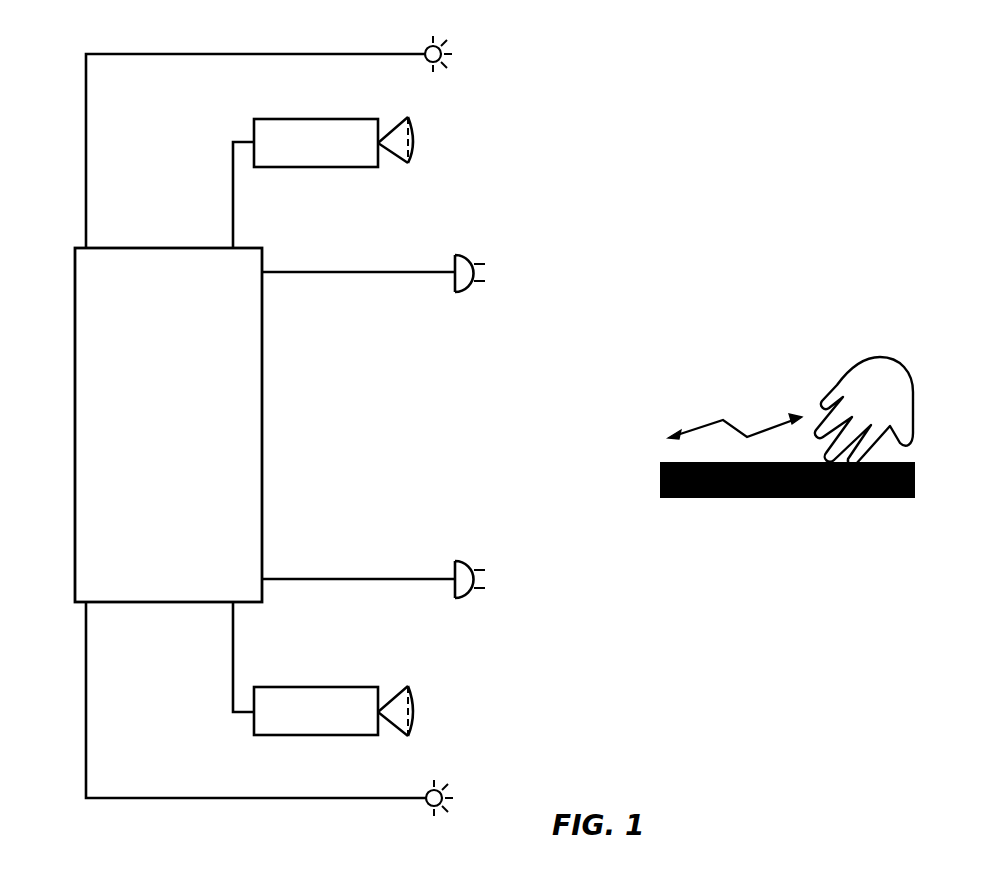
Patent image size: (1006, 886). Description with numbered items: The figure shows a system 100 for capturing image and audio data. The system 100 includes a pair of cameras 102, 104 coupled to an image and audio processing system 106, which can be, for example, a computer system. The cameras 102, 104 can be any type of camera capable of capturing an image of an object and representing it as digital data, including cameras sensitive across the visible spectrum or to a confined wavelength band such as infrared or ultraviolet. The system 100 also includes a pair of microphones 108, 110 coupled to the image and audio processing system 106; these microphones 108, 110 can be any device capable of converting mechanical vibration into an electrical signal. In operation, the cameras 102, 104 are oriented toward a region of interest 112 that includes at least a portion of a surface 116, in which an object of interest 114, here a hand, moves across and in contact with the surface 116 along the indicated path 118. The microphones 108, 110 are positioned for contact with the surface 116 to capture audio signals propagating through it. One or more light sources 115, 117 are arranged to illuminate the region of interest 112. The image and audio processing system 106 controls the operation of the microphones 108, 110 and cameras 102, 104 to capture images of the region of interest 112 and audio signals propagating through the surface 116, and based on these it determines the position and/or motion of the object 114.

The system 100 is at (830, 62).
The camera 102 is at (300, 118).
The camera 104 is at (320, 737).
The image and audio processing system 106 is at (146, 247).
The microphone 108 is at (457, 562).
The microphone 110 is at (457, 255).
The region of interest 112 is at (638, 564).
The object of interest 114 is at (907, 370).
The light source 115 is at (425, 807).
The surface 116 is at (787, 493).
The light source 117 is at (420, 65).
The path 118 is at (723, 420).